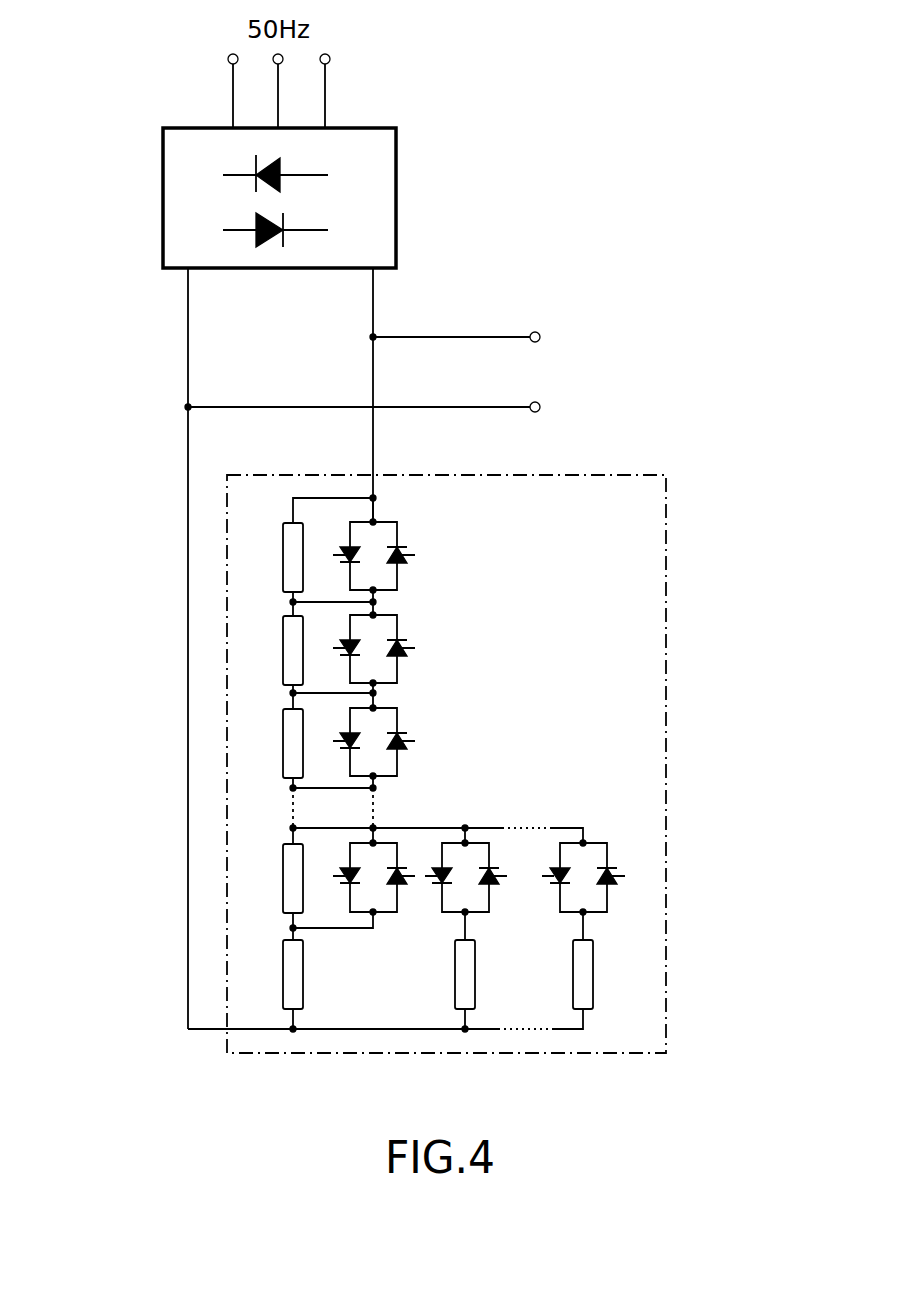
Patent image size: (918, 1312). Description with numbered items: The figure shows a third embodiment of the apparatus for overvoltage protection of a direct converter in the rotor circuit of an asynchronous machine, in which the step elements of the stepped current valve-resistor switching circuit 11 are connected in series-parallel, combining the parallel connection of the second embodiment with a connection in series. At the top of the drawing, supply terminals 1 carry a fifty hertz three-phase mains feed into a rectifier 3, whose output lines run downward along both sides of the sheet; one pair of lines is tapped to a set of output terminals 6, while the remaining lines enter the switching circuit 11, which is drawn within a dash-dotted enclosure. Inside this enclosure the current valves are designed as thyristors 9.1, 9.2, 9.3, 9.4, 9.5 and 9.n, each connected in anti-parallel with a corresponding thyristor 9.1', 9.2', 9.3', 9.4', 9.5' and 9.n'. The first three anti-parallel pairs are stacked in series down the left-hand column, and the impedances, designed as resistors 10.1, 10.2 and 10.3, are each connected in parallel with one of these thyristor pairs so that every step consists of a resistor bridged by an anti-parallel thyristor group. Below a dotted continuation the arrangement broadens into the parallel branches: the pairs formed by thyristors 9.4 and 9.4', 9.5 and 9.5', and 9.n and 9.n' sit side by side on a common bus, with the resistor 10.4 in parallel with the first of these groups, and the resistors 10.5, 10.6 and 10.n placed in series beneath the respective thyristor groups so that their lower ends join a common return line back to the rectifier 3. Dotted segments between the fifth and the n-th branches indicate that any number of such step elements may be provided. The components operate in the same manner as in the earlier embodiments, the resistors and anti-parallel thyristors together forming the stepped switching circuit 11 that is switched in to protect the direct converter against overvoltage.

The three-phase mains terminals (50 Hz) 1 is at (228, 61).
The rectifier 3 is at (372, 137).
The DC output terminals 6 is at (540, 341).
The stepped current valve-resistor switching circuit 11 is at (667, 588).
The thyristor 9.1 is at (336, 533).
The thyristor 9.1' is at (413, 533).
The thyristor 9.2 is at (336, 630).
The thyristor 9.2' is at (413, 628).
The thyristor 9.3 is at (336, 724).
The thyristor 9.3' is at (415, 722).
The thyristor 9.4 is at (334, 857).
The thyristor 9.4' is at (412, 857).
The thyristor 9.5 is at (427, 897).
The thyristor 9.5' is at (504, 897).
The thyristor 9.n is at (538, 857).
The thyristor 9.n' is at (629, 857).
The resistor 10.1 is at (283, 555).
The resistor 10.2 is at (283, 650).
The resistor 10.3 is at (283, 740).
The resistor 10.4 is at (283, 878).
The resistor 10.5 is at (283, 972).
The resistor 10.6 is at (455, 972).
The resistor 10.n is at (593, 972).